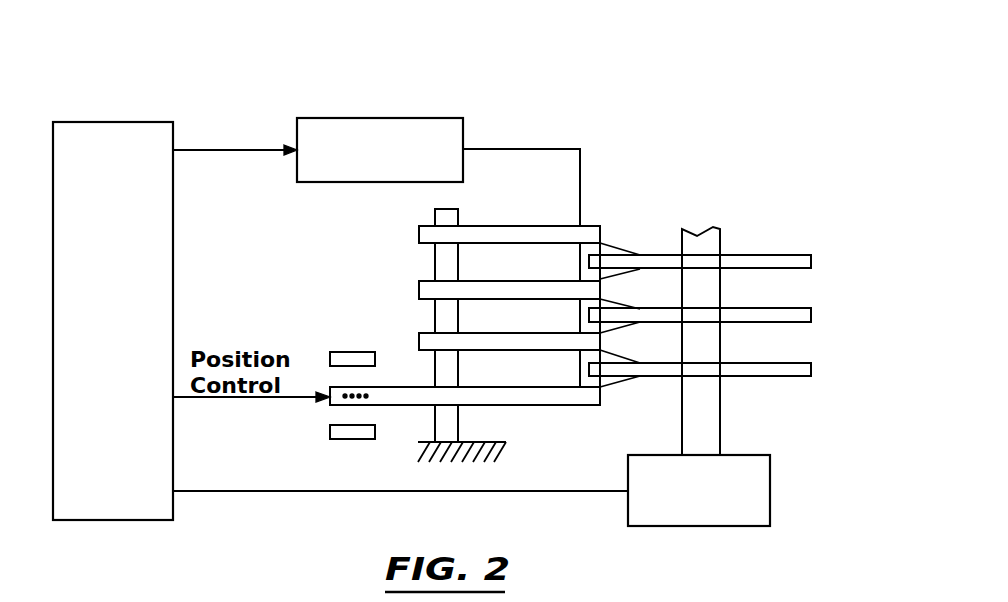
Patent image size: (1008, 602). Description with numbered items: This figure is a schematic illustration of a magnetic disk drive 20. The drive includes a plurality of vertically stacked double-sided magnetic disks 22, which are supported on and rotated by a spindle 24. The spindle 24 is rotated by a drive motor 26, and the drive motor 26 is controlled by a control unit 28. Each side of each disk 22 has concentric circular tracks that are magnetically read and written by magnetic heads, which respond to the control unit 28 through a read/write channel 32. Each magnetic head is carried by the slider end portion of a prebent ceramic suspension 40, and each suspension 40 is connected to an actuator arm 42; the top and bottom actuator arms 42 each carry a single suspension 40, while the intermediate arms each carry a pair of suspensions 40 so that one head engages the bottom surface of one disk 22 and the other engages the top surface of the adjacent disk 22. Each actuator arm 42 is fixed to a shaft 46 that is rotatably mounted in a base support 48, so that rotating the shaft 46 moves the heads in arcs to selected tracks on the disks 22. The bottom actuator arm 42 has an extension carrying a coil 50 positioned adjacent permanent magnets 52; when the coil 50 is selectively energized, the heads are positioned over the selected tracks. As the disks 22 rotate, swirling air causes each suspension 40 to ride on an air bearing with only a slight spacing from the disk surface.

The magnetic disk drive 20 is at (566, 92).
The magnetic disks 22 is at (786, 255).
The spindle 24 is at (722, 395).
The drive motor 26 is at (772, 473).
The control unit 28 is at (127, 311).
The read/write channel 32 is at (383, 118).
The prebent ceramic suspension 40 is at (615, 244).
The actuator arm 42 is at (506, 226).
The shaft 46 is at (435, 261).
The base support 48 is at (486, 455).
The coil 50 is at (336, 405).
The permanent magnets 52 is at (341, 352).